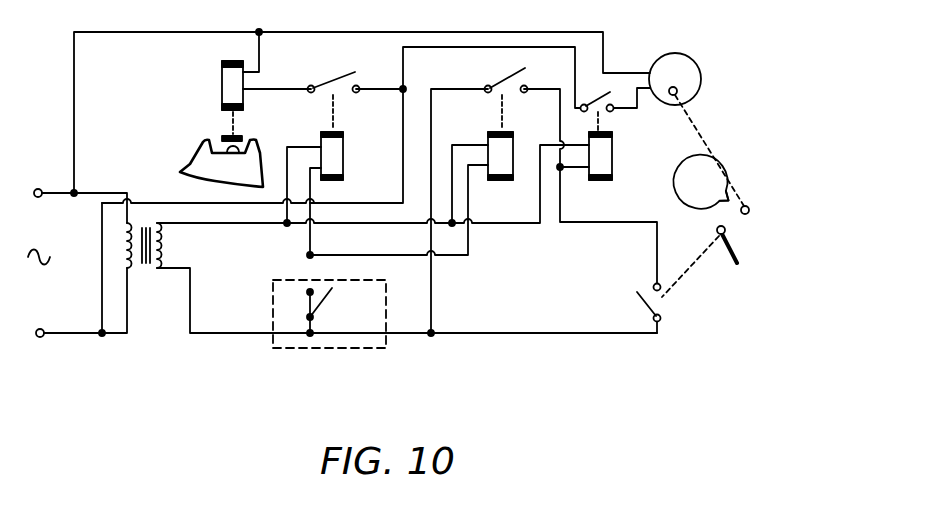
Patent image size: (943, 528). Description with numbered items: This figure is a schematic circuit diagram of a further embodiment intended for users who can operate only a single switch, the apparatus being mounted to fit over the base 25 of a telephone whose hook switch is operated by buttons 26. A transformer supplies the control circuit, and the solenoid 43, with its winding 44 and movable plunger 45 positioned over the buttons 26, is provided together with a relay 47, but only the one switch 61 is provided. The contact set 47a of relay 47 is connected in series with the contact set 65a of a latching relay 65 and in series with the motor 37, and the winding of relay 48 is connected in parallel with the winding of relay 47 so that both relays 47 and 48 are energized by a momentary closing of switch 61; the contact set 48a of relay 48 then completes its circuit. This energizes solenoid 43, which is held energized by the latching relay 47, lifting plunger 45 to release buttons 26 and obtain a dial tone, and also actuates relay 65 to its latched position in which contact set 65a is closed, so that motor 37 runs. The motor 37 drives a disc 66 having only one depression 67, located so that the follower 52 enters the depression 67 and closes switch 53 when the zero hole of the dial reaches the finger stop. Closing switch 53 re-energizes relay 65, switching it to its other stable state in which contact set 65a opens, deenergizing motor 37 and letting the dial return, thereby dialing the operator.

The base 25 is at (188, 163).
The buttons 26 is at (226, 143).
The motor 37 is at (701, 75).
The solenoid 43 is at (198, 116).
The winding 44 is at (222, 99).
The plunger 45 is at (242, 137).
The relay 47 is at (343, 152).
The contact set 47a is at (308, 85).
The relay 48 is at (488, 136).
The contact set 48a is at (510, 70).
The follower 52 is at (739, 255).
The switch 53 is at (670, 303).
The switch 61 is at (329, 305).
The latching relay 65 is at (612, 152).
The contact set 65a is at (596, 100).
The disc 66 is at (757, 185).
The depression 67 is at (723, 200).